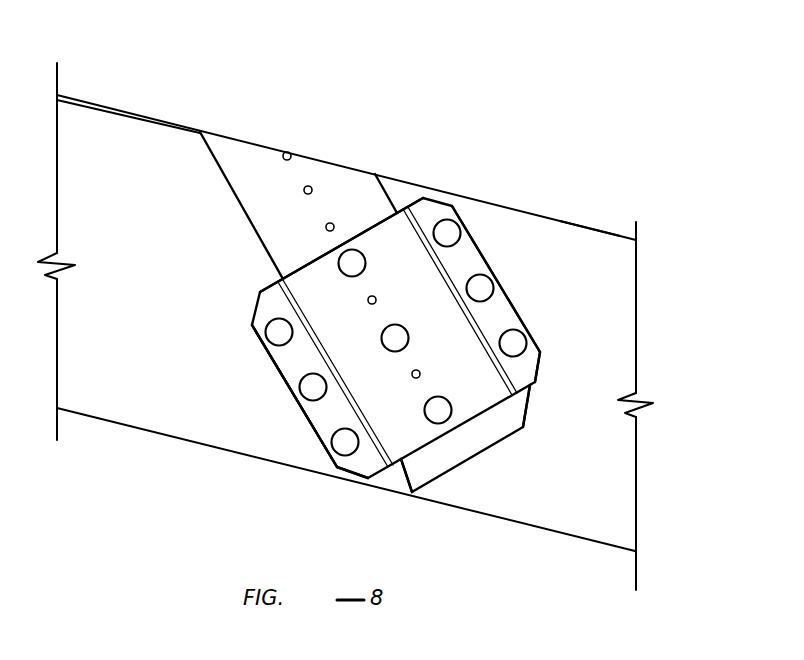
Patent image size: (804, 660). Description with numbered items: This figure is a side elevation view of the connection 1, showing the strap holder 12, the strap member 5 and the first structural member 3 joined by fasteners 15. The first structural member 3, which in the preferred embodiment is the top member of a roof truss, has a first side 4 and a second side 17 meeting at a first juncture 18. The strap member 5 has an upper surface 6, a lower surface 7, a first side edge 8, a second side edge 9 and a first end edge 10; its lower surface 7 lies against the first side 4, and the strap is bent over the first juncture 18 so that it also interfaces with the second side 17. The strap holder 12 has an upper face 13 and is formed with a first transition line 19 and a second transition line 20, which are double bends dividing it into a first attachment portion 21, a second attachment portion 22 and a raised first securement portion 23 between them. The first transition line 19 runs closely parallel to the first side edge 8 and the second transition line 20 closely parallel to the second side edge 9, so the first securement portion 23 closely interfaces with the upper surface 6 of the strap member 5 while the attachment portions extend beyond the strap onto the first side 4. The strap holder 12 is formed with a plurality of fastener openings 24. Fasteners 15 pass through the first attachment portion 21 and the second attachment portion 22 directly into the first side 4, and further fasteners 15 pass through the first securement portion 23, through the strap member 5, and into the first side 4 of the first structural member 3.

The connection 1 is at (385, 324).
The first structural member 3 is at (607, 226).
The first side 4 is at (620, 278).
The strap member 5 is at (220, 126).
The upper surface 6 is at (361, 174).
The lower surface 7 is at (142, 122).
The first side edge 8 is at (400, 483).
The second side edge 9 is at (528, 420).
The first end edge 10 is at (462, 463).
The strap holder 12 is at (253, 352).
The upper face 13 is at (450, 195).
The fasteners 15 is at (523, 340).
The second side 17 is at (420, 188).
The first juncture 18 is at (590, 228).
The first transition line 19 is at (280, 308).
The second transition line 20 is at (522, 379).
The first attachment portion 21 is at (352, 468).
The second attachment portion 22 is at (543, 345).
The first securement portion 23 is at (420, 494).
The fastener openings 24 is at (333, 224).